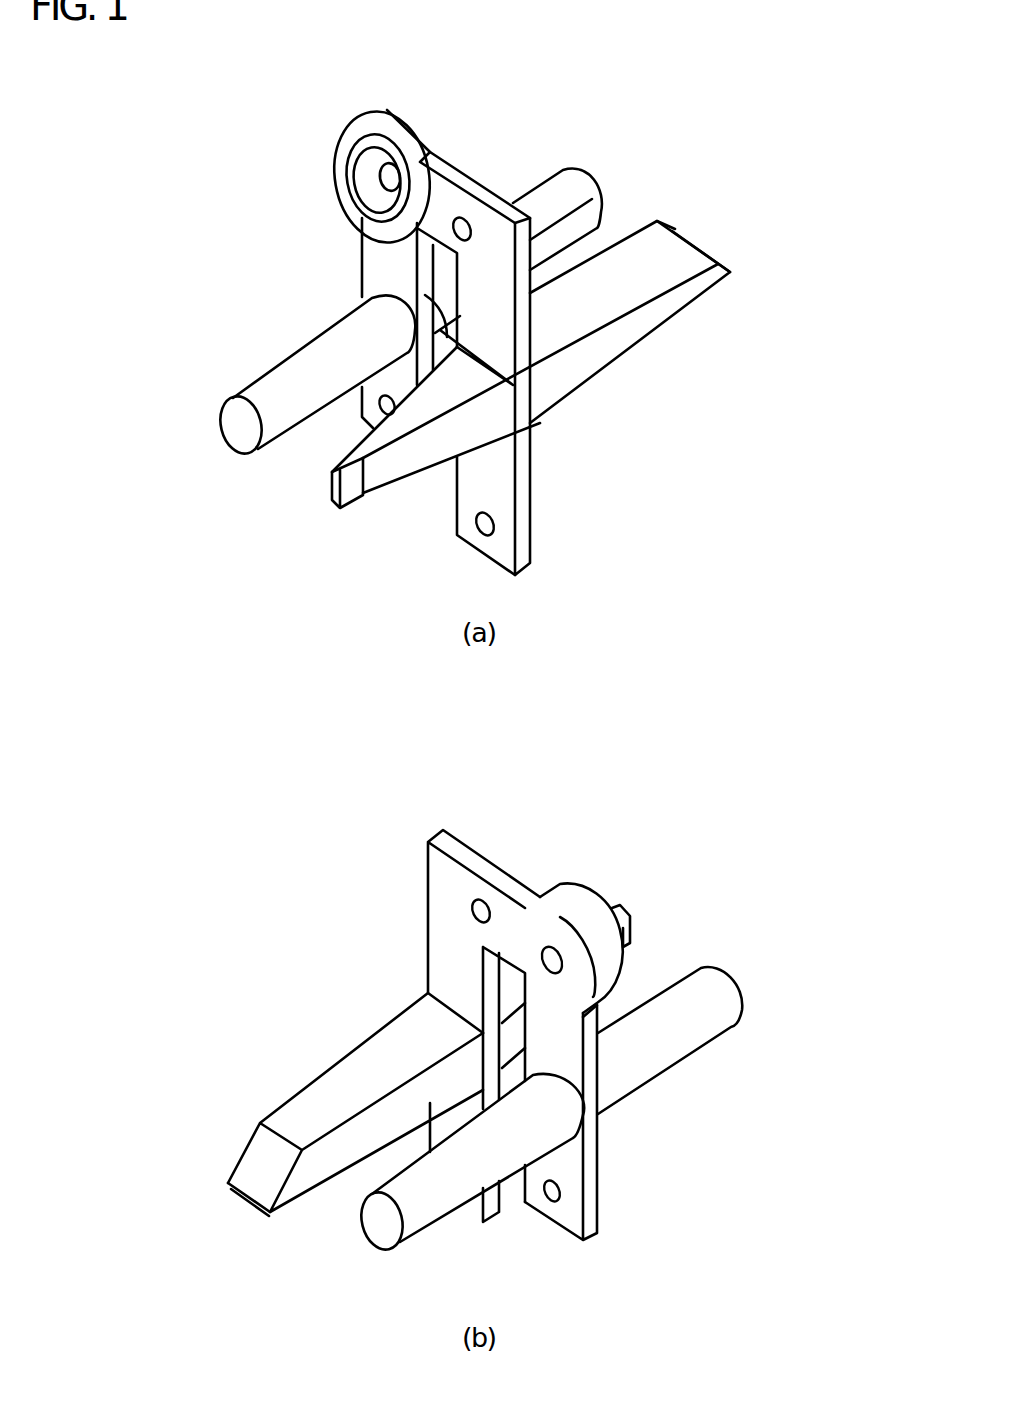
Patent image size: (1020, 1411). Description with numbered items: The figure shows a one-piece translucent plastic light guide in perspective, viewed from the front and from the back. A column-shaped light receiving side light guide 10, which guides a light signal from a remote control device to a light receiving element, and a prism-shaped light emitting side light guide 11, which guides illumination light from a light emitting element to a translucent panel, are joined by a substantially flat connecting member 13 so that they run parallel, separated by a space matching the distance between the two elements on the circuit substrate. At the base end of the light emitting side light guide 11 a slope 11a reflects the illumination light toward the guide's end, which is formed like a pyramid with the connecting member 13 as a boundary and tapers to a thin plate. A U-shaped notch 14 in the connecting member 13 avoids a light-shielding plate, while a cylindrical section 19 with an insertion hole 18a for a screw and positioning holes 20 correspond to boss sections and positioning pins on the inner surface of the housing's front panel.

The light receiving side light guide 10 is at (234, 382).
The light emitting side light guide 11 is at (701, 327).
The slope 11a is at (693, 247).
The connecting member 13 is at (490, 263).
The U-shaped notch 14 is at (530, 415).
The insertion hole 18a is at (388, 175).
The cylindrical section 19 is at (350, 143).
The positioning holes 20 is at (463, 229).